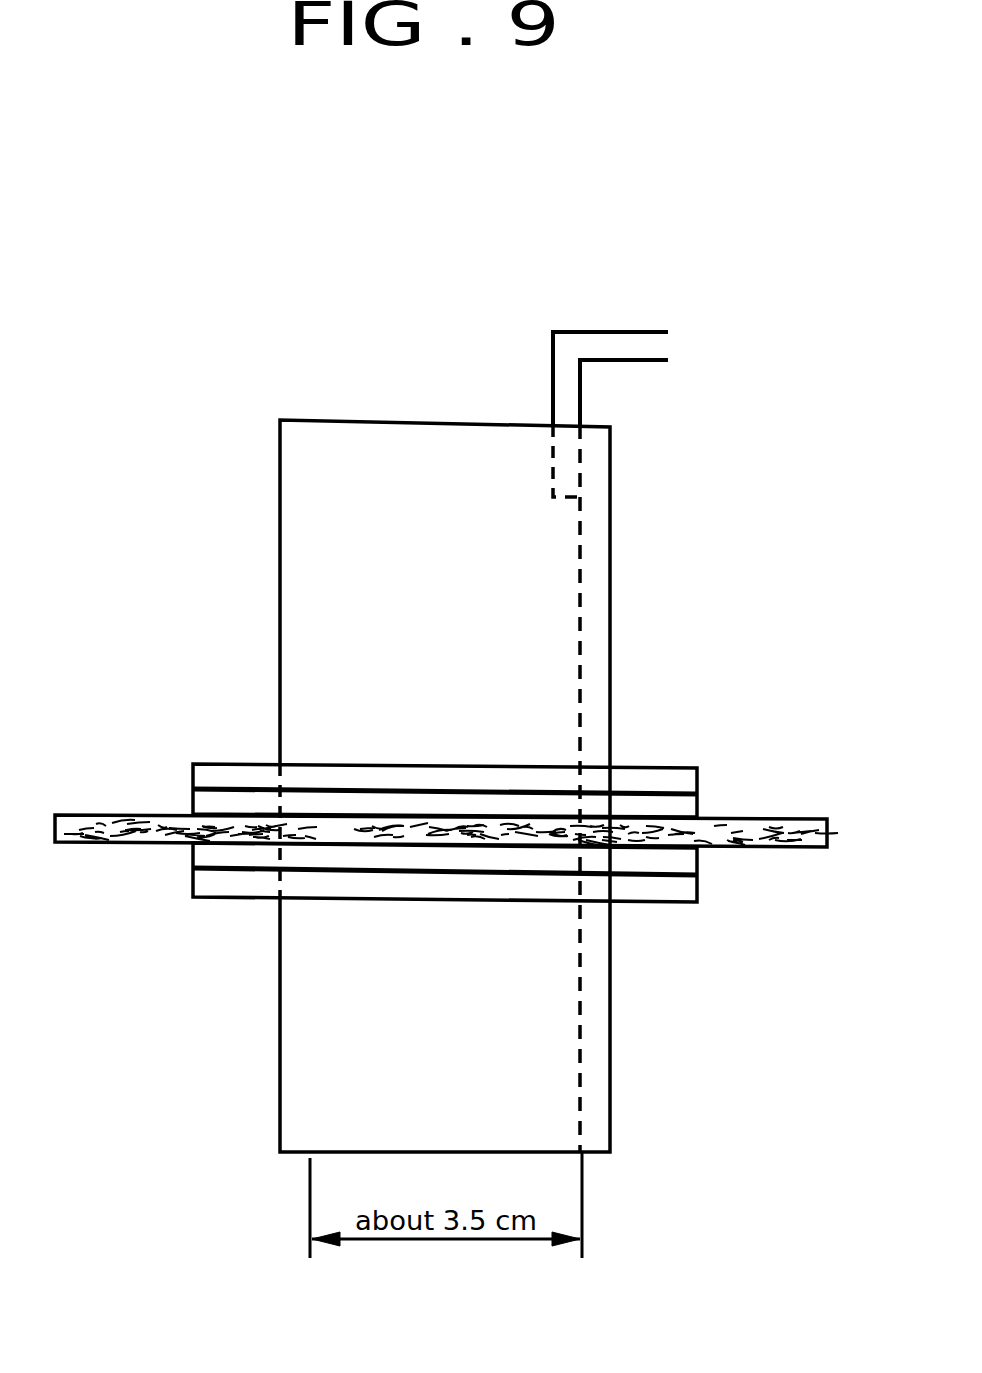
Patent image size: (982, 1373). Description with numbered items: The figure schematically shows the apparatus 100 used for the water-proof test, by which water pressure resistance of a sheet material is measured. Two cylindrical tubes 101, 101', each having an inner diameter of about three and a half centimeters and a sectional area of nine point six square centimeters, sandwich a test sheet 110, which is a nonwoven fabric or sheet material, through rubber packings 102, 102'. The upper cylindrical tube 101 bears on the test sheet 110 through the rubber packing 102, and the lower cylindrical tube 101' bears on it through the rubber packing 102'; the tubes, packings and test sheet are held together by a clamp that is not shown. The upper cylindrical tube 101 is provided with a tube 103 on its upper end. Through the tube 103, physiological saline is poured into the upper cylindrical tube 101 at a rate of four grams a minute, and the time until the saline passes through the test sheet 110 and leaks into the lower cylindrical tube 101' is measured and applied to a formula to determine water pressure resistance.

The apparatus 100 is at (732, 370).
The upper cylindrical tube 101 is at (501, 786).
The lower cylindrical tube 101' is at (655, 788).
The rubber packing 102 is at (486, 745).
The rubber packing 102' is at (492, 916).
The tube 103 is at (620, 347).
The test sheet 110 is at (810, 818).